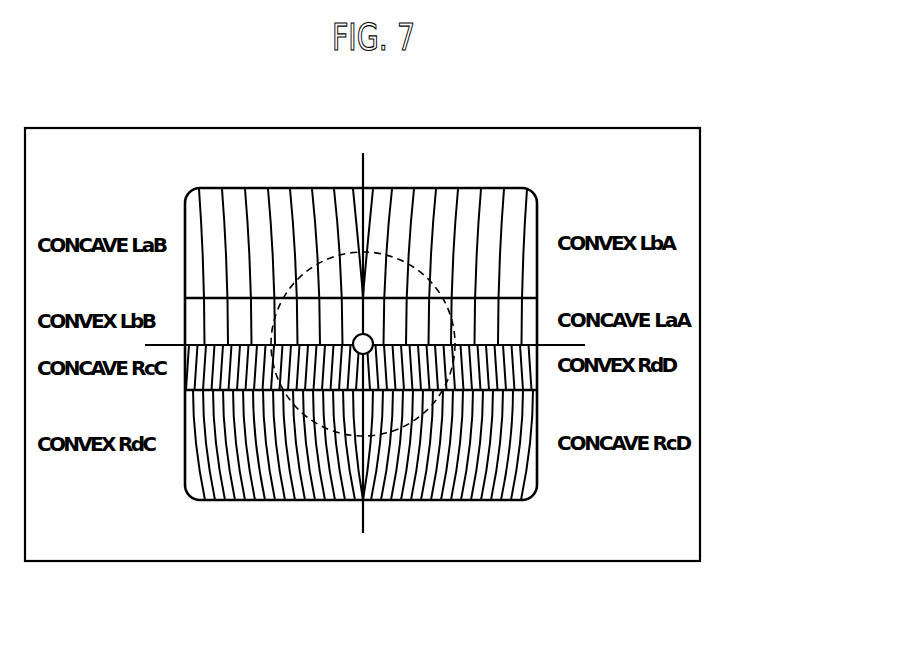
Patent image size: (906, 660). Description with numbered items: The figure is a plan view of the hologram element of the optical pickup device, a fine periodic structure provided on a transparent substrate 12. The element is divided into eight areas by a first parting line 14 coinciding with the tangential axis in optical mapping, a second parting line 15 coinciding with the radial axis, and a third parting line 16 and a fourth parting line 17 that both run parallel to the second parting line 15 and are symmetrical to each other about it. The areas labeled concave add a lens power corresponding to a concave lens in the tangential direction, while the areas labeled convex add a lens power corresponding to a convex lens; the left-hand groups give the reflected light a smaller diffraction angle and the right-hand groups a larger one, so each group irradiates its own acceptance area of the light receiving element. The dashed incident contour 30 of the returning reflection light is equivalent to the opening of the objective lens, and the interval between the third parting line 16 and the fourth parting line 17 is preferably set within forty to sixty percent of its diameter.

The transparent substrate 12 is at (653, 500).
The first parting line 14 is at (366, 203).
The second parting line 15 is at (522, 343).
The third parting line 16 is at (498, 298).
The fourth parting line 17 is at (522, 391).
The incident contour 30 is at (407, 428).